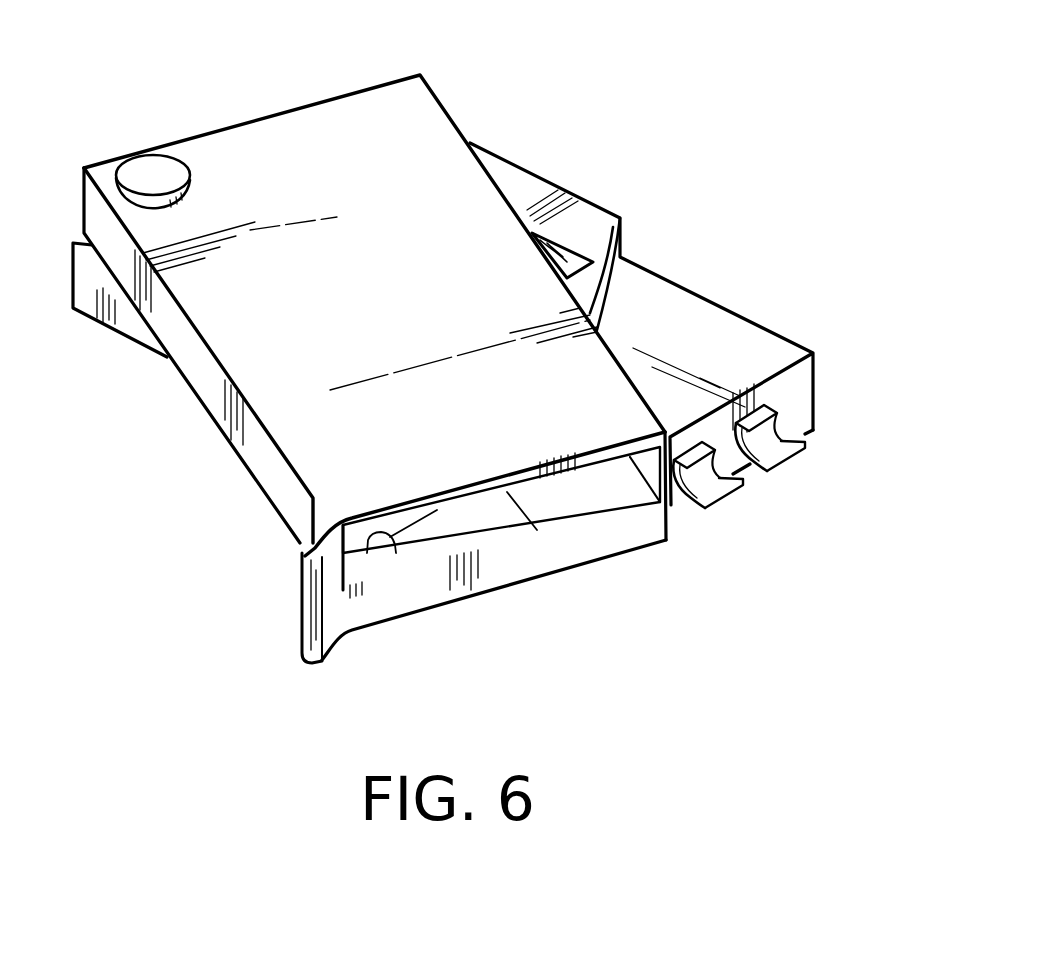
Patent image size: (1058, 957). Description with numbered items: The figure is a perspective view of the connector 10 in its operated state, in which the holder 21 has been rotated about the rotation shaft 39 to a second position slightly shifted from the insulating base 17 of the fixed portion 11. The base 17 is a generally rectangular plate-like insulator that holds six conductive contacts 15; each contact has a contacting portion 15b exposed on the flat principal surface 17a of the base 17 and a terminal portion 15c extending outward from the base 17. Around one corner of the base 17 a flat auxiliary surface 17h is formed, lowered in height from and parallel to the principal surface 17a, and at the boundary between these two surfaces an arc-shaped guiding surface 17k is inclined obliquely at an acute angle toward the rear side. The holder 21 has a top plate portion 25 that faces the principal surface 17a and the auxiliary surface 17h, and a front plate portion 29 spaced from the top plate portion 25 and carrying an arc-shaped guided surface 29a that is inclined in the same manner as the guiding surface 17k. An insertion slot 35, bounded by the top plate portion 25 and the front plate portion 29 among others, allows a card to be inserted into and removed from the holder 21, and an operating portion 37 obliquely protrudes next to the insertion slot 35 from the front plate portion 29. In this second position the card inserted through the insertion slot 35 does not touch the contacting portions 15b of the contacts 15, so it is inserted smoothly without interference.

The connector 10 is at (478, 108).
The fixed portion 11 is at (98, 318).
The conductive contacts 15 is at (802, 456).
The contacting portion 15b is at (562, 240).
The terminal portion 15c is at (806, 446).
The insulating base 17 is at (790, 340).
The principal surface 17a is at (525, 178).
The auxiliary surface 17h is at (712, 328).
The guiding surface 17k is at (617, 300).
The holder 21 is at (247, 467).
The top plate portion 25 is at (257, 350).
The front plate portion 29 is at (490, 517).
The guided surface 29a is at (380, 533).
The insertion slot 35 is at (577, 530).
The operating portion 37 is at (313, 596).
The rotation shaft 39 is at (147, 182).